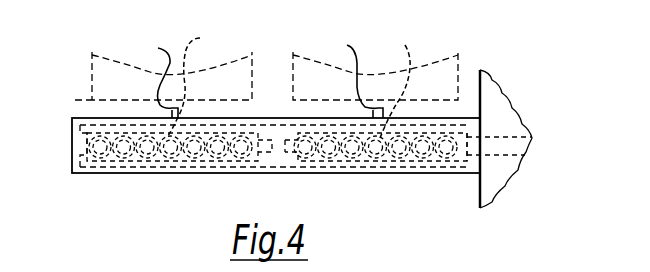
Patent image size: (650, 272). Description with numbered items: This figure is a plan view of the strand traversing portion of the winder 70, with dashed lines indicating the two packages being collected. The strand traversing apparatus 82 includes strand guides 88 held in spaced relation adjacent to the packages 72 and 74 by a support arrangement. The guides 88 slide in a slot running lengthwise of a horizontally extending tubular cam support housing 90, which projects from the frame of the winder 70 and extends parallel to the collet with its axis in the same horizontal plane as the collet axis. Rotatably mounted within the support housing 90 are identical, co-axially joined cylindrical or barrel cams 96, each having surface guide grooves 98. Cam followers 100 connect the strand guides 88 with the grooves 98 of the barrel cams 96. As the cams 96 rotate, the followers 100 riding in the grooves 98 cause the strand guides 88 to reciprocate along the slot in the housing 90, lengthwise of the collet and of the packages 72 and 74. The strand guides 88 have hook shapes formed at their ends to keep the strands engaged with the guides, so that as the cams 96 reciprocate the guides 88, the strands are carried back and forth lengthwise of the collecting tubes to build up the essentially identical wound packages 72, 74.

The winder 70 is at (479, 195).
The wound package 72 is at (92, 100).
The wound package 74 is at (293, 100).
The strand traversing apparatus 82 is at (250, 182).
The strand guide 88 is at (255, 79).
The cam support housing 90 is at (95, 178).
The barrel cam 96 is at (158, 144).
The surface guide groove 98 is at (163, 150).
The cam follower 100 is at (289, 82).